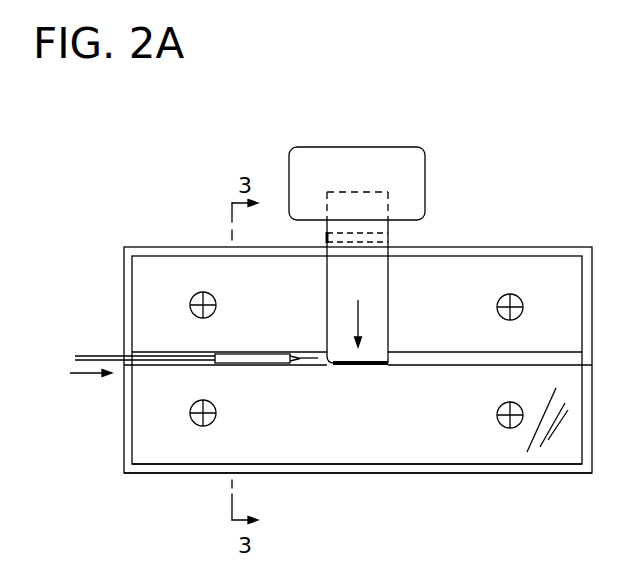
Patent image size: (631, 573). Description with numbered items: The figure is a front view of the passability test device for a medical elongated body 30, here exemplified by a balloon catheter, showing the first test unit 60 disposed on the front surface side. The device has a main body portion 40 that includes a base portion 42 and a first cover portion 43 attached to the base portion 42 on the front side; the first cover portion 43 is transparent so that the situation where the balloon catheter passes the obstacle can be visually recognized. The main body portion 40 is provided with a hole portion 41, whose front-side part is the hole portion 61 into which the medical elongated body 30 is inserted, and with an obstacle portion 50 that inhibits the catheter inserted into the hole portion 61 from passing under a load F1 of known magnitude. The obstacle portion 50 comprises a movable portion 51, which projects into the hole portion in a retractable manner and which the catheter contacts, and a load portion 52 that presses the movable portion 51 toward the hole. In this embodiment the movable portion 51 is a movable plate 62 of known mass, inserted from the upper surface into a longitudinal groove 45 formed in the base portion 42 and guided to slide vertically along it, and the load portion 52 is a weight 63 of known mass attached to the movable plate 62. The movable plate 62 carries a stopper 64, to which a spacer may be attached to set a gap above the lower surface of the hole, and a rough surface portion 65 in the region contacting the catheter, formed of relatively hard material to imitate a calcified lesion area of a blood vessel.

The first test unit 60 is at (117, 234).
The main body portion 40 is at (121, 298).
The base portion 42 is at (128, 411).
The first cover portion 43 is at (140, 457).
The hole portion 41 is at (319, 424).
The medical elongated body 30 is at (250, 361).
The longitudinal groove 45 is at (330, 277).
The rough surface portion 65 is at (360, 366).
The hole portion 61 is at (308, 360).
The load F1 is at (360, 310).
The stopper 64 is at (390, 242).
The movable plate 62 is at (367, 283).
The weight 63 is at (414, 192).
The load portion 52 is at (490, 187).
The movable portion 51 is at (490, 227).
The obstacle portion 50 is at (553, 176).